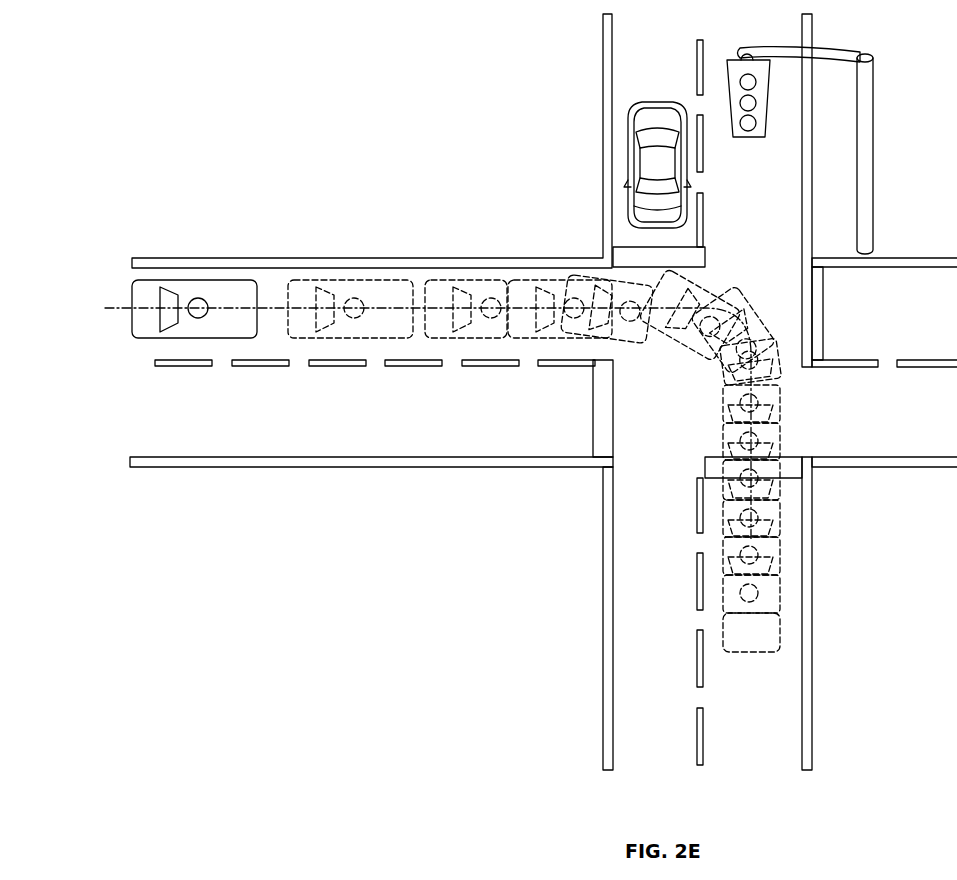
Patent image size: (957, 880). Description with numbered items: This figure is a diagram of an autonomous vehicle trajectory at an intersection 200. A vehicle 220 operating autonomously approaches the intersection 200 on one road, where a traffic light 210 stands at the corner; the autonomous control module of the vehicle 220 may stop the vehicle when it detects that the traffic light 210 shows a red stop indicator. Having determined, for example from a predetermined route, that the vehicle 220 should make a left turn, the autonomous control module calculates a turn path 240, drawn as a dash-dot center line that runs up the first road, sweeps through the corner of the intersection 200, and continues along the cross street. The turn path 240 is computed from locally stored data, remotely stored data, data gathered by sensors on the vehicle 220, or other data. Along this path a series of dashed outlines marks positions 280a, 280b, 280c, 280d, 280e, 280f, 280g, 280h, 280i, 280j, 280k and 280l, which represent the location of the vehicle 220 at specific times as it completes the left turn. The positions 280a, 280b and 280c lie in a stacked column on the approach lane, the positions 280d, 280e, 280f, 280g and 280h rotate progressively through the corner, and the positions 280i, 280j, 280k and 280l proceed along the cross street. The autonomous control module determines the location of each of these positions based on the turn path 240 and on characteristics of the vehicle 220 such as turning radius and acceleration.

The intersection 200 is at (603, 257).
The traffic light 210 is at (727, 66).
The vehicle 220 is at (780, 630).
The turn path 240 is at (110, 315).
The position 280a is at (780, 512).
The position 280b is at (780, 480).
The position 280c is at (780, 437).
The position 280d is at (780, 390).
The position 280e is at (780, 337).
The position 280f is at (768, 308).
The position 280g is at (688, 288).
The position 280h is at (640, 280).
The position 280i is at (580, 280).
The position 280j is at (448, 280).
The position 280k is at (358, 280).
The position 280l is at (200, 280).